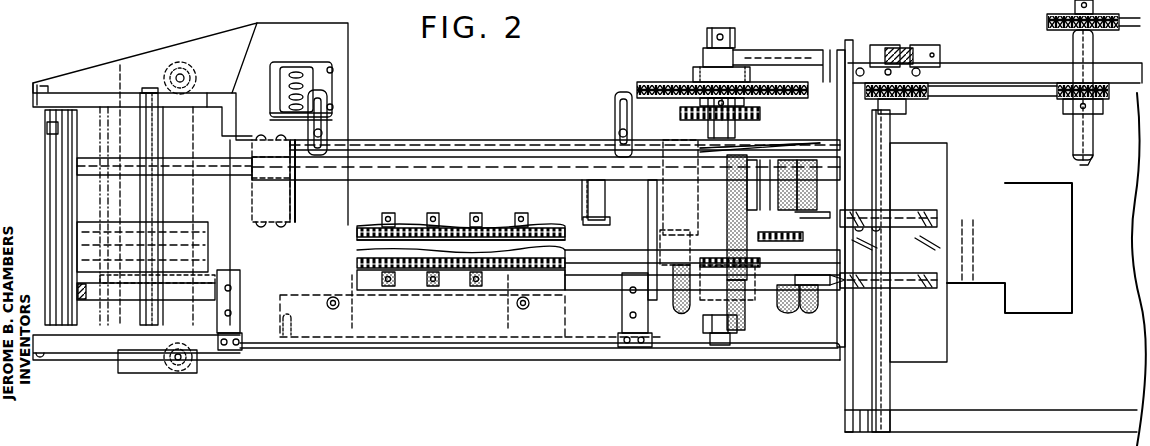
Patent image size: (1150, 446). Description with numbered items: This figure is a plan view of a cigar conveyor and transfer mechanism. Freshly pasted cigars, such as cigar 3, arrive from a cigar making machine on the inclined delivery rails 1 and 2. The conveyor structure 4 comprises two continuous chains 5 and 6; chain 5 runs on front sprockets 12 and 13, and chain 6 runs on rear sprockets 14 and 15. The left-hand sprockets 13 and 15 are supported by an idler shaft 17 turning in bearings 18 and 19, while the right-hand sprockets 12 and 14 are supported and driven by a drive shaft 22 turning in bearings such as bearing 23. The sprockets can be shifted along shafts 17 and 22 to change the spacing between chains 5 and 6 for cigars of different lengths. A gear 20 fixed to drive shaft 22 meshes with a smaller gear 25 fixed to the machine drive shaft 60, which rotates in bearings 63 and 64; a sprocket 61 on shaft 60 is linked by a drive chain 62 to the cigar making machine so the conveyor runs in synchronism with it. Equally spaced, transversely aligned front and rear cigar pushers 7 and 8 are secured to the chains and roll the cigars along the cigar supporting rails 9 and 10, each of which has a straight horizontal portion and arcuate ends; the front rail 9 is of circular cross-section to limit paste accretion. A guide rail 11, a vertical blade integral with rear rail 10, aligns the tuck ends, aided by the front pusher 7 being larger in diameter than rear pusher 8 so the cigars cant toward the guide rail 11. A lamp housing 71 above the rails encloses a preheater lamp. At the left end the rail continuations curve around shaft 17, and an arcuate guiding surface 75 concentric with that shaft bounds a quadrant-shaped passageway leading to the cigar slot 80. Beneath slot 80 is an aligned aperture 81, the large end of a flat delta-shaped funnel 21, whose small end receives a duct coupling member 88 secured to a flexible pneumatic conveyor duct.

The inclined delivery rail 1 is at (920, 286).
The inclined delivery rail 2 is at (915, 210).
The cigar 3 is at (785, 292).
The conveyor structure 4 is at (551, 372).
The chain 5 is at (456, 272).
The chain 6 is at (448, 224).
The front cigar pusher 7 is at (393, 282).
The rear cigar pusher 8 is at (390, 215).
The front supporting rail 9 is at (205, 285).
The rear supporting rail 10 is at (556, 166).
The guide rail 11 is at (483, 155).
The front sprocket 12 is at (760, 272).
The front sprocket 13 is at (100, 275).
The rear sprocket 14 is at (204, 222).
The rear sprocket 15 is at (762, 222).
The idler shaft 17 is at (150, 85).
The bearing 18 is at (107, 342).
The bearing 19 is at (110, 95).
The gear 20 is at (680, 115).
The funnel 21 is at (140, 140).
The drive shaft 22 is at (722, 345).
The bearing 23 is at (700, 325).
The gear 25 is at (730, 116).
The machine drive shaft 60 is at (720, 27).
The sprocket 61 is at (650, 82).
The drive chain 62 is at (822, 80).
The bearing 63 is at (745, 150).
The bearing 64 is at (703, 52).
The lamp housing 71 is at (390, 345).
The arcuate guiding surface 75 is at (62, 148).
The cigar slot 80 is at (160, 126).
The aperture 81 is at (152, 372).
The duct coupling member 88 is at (100, 256).